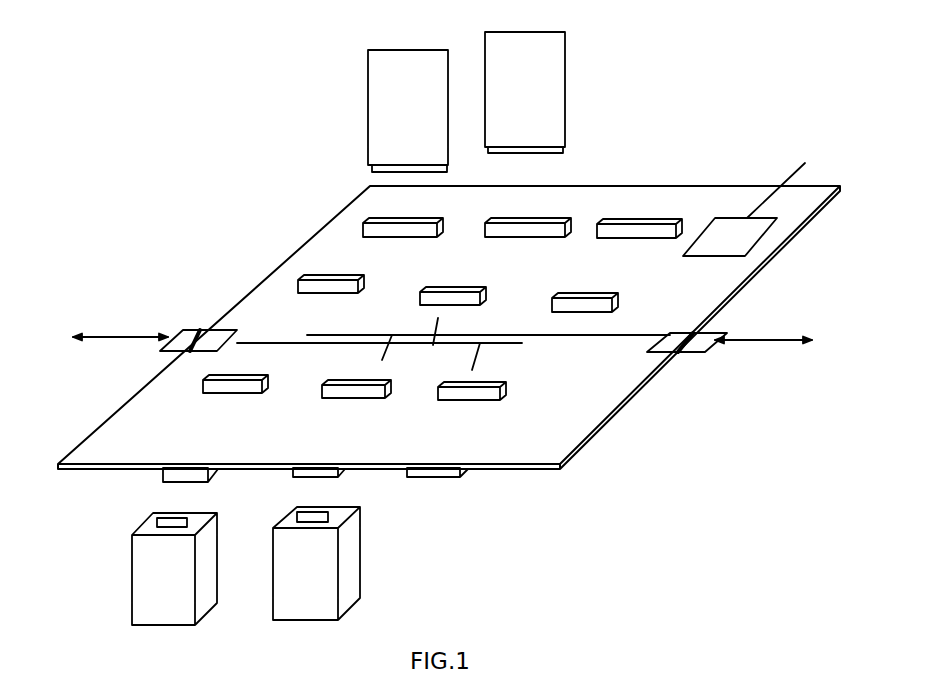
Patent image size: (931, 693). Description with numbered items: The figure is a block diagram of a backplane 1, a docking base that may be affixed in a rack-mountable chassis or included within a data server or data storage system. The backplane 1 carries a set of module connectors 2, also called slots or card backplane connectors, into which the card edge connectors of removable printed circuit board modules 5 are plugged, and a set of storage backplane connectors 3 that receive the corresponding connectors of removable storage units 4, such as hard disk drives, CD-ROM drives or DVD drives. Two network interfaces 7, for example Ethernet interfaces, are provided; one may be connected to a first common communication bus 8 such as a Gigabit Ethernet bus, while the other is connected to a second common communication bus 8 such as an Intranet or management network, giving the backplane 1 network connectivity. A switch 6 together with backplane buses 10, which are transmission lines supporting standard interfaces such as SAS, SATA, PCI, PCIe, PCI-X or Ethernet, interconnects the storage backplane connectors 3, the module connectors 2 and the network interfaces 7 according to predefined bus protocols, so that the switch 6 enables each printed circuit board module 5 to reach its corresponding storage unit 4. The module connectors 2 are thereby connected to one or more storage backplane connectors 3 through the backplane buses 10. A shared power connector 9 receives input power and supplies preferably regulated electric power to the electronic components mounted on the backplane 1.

The backplane 1 is at (635, 180).
The module connectors 2 is at (400, 220).
The storage backplane connectors 3 is at (315, 481).
The storage units 4 is at (156, 595).
The printed circuit board modules 5 is at (401, 124).
The switch 6 is at (224, 329).
The network interfaces 7 is at (183, 329).
The common communication bus 8 is at (442, 353).
The shared power connector 9 is at (744, 209).
The backplane buses 10 is at (542, 336).